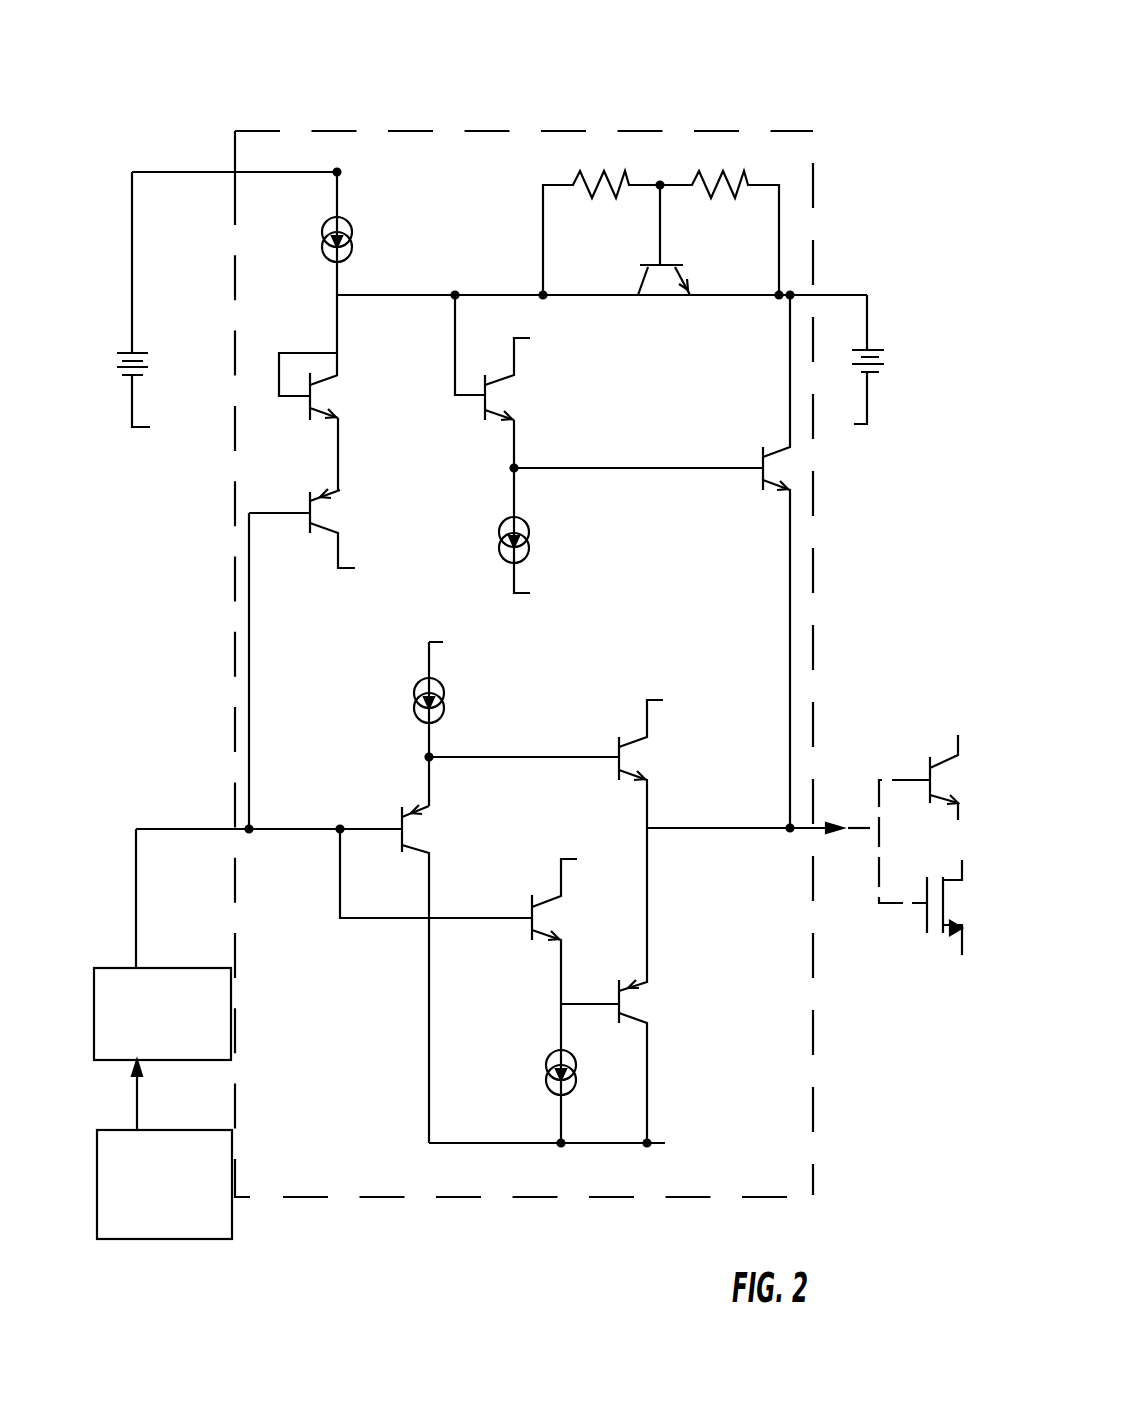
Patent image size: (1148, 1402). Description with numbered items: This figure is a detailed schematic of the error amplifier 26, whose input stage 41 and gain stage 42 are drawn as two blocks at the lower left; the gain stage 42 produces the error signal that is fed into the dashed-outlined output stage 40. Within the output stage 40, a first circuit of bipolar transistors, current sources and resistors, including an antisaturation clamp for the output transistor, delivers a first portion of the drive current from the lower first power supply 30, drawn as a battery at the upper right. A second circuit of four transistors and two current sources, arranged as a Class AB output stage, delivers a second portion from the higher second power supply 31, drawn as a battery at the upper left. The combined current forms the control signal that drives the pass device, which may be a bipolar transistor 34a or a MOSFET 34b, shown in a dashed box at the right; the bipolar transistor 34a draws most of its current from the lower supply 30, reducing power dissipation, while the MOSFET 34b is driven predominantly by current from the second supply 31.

The error amplifier 26 is at (847, 101).
The first power supply 30 is at (887, 350).
The second power supply 31 is at (103, 370).
The bipolar transistor 34a is at (927, 758).
The MOSFET 34b is at (922, 925).
The output stage 40 is at (435, 130).
The input stage 41 is at (145, 1239).
The gain stage 42 is at (95, 1062).